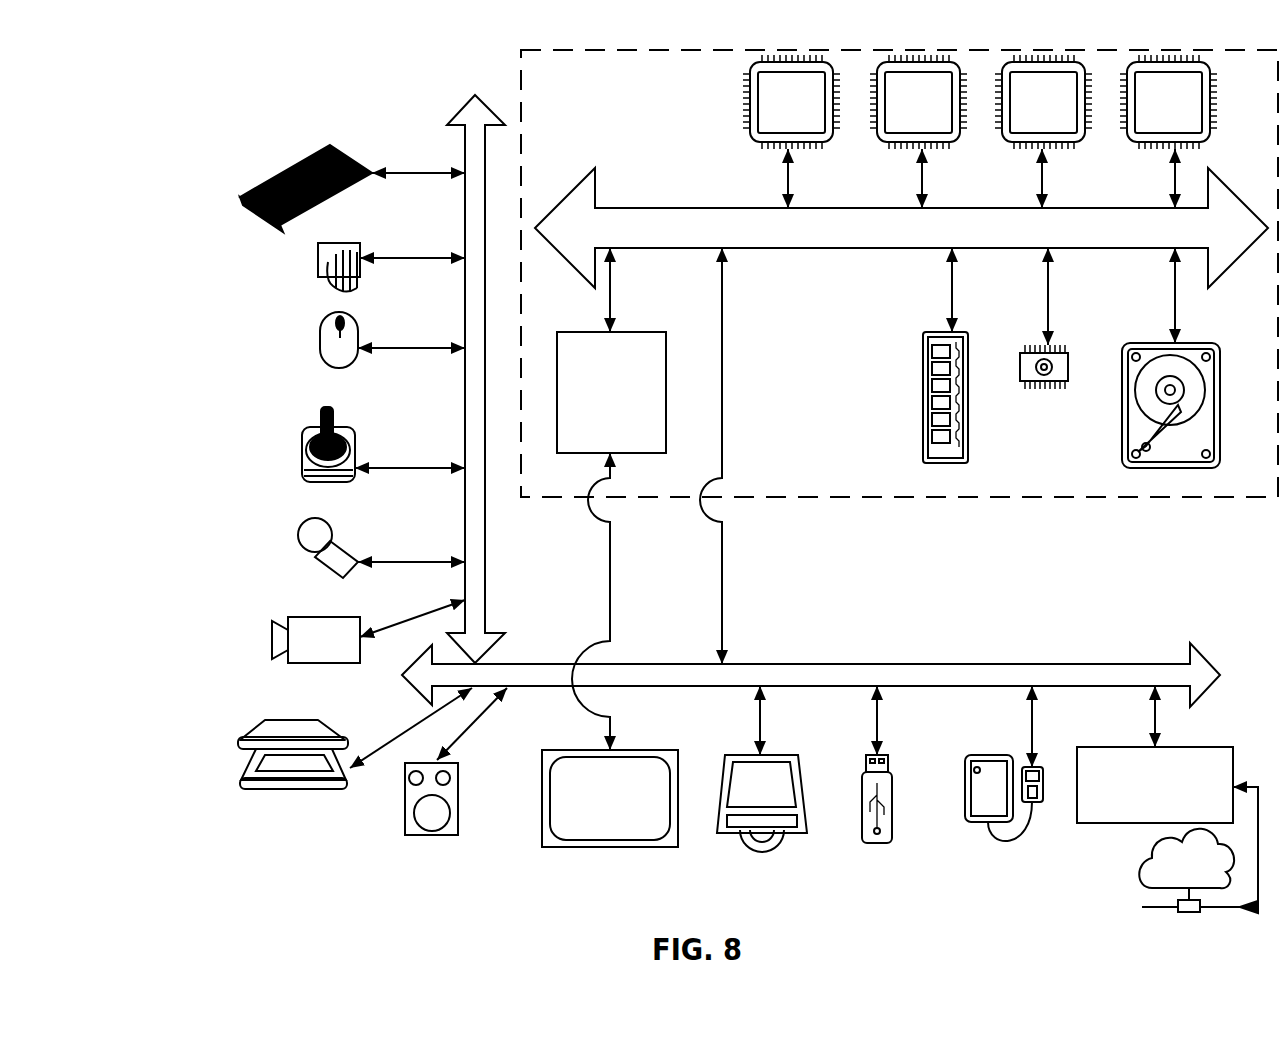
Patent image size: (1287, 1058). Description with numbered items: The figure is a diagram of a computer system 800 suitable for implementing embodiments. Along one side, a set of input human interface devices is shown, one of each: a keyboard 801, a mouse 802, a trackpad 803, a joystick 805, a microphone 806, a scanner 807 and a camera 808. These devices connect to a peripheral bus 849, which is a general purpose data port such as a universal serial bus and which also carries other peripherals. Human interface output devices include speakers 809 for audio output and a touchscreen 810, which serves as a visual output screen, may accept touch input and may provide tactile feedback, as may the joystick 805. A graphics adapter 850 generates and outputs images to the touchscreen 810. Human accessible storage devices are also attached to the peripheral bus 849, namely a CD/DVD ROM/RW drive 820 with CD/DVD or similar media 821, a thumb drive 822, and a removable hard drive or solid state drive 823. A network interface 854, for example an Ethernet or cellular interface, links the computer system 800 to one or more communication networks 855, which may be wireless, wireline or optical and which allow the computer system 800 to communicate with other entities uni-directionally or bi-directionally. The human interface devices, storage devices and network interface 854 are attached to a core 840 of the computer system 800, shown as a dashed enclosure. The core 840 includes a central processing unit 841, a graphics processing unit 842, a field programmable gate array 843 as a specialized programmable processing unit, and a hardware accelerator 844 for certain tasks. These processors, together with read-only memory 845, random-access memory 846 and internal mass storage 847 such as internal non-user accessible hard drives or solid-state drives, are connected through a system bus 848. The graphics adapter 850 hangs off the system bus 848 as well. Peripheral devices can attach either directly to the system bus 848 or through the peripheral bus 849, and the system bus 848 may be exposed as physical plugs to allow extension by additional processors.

The computer system 800 is at (146, 82).
The keyboard 801 is at (240, 198).
The mouse 802 is at (318, 342).
The trackpad 803 is at (318, 270).
The joystick 805 is at (302, 465).
The microphone 806 is at (298, 540).
The scanner 807 is at (242, 772).
The camera 808 is at (272, 652).
The speakers 809 is at (425, 835).
The touchscreen 810 is at (605, 847).
The CD/DVD ROM/RW drive 820 is at (796, 836).
The CD/DVD media 821 is at (742, 836).
The thumb drive 822 is at (877, 843).
The removable hard drive or solid state drive 823 is at (968, 824).
The core 840 is at (892, 497).
The central processing unit 841 is at (772, 128).
The graphics processing unit 842 is at (899, 128).
The field programmable gate array 843 is at (1024, 128).
The hardware accelerator 844 is at (1149, 128).
The read-only memory 845 is at (1030, 390).
The random-access memory 846 is at (923, 395).
The internal mass storage 847 is at (1135, 345).
The system bus 848 is at (982, 240).
The peripheral bus 849 is at (465, 128).
The graphics adapter 850 is at (592, 428).
The network interface 854 is at (1222, 814).
The communication network 855 is at (1142, 880).